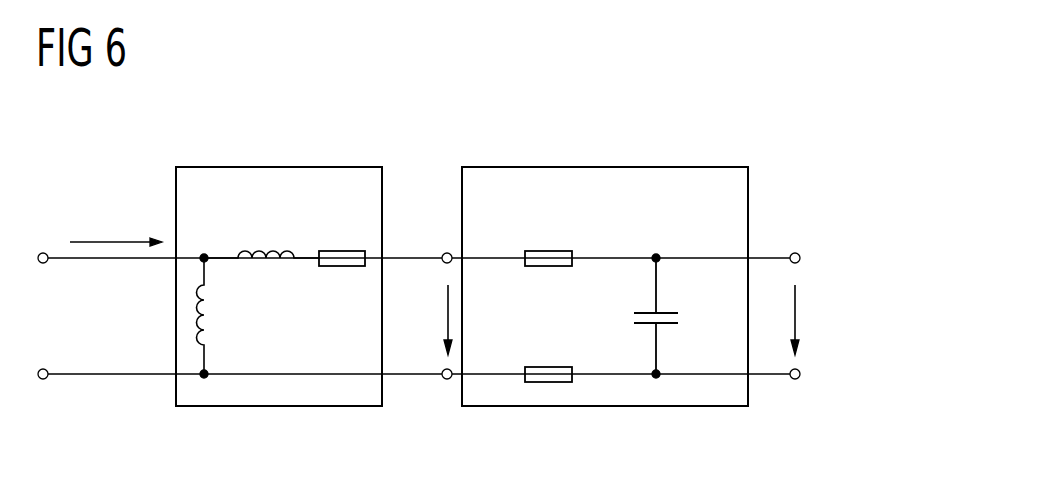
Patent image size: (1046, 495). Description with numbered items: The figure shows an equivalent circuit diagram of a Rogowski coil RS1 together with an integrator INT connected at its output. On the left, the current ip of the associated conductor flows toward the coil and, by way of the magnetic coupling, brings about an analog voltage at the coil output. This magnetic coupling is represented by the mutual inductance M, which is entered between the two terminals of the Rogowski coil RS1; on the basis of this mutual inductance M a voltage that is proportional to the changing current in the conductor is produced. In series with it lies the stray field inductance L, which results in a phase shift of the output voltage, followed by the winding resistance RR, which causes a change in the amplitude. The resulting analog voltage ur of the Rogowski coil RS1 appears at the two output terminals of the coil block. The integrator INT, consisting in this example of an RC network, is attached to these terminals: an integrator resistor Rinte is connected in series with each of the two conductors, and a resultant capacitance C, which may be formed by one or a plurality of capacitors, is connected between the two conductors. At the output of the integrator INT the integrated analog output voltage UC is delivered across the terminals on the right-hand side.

The Rogowski coil RS1 is at (328, 142).
The integrator INT is at (656, 140).
The stray field inductance L is at (275, 249).
The winding resistance RR is at (344, 250).
The mutual inductance M is at (200, 310).
The resultant capacitance C is at (680, 322).
The integrator resistor Rinte is at (549, 366).
The current of the associated conductor ip is at (116, 221).
The analog voltage of the Rogowski coil ur is at (423, 320).
The integrated analog output voltage UC is at (824, 320).